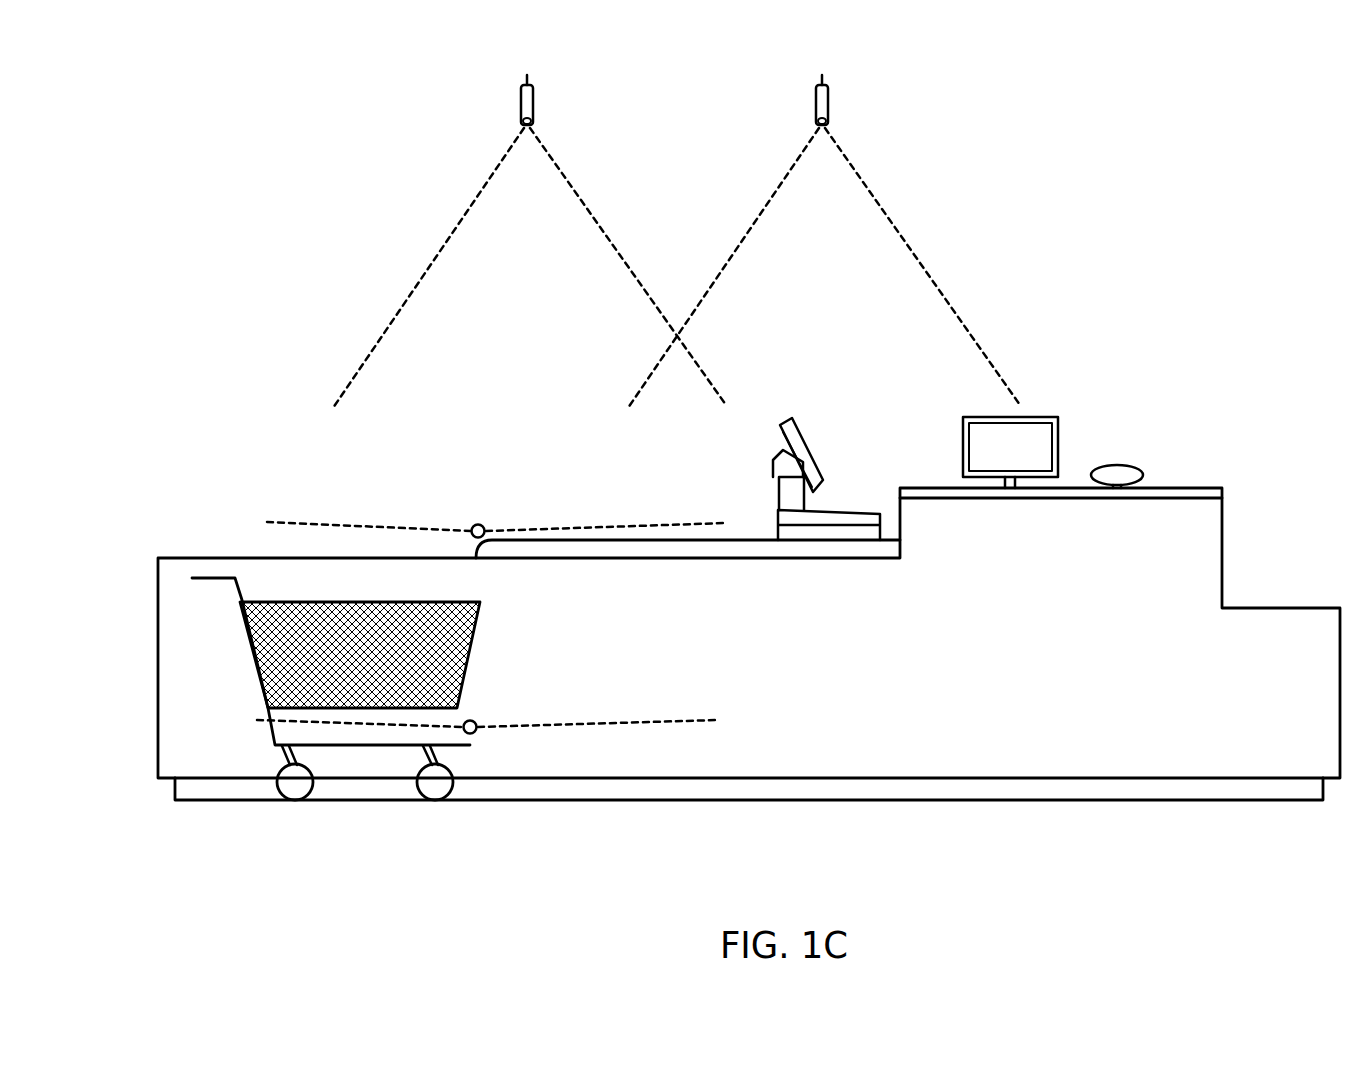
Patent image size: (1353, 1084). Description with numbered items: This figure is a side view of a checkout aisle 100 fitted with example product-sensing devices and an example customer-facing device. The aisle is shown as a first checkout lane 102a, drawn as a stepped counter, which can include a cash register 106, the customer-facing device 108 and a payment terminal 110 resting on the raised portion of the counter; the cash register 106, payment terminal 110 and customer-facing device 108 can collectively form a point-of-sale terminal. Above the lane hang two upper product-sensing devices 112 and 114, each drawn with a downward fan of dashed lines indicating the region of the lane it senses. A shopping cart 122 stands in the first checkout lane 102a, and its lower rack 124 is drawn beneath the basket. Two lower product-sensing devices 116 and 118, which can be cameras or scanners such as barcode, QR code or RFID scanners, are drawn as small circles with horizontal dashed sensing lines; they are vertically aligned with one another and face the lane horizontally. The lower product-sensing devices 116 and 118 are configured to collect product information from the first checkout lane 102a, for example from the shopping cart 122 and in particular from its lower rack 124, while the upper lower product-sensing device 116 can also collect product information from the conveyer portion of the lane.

The checkout aisle 100 is at (239, 86).
The first checkout lane 102a is at (158, 633).
The cash register 106 is at (840, 429).
The customer-facing device 108 is at (1037, 417).
The payment terminal 110 is at (1143, 476).
The upper product-sensing device 112 is at (521, 108).
The upper product-sensing device 114 is at (816, 108).
The lower product-sensing device 116 is at (479, 525).
The lower product-sensing device 118 is at (470, 719).
The shopping cart 122 is at (472, 653).
The lower rack 124 is at (458, 745).